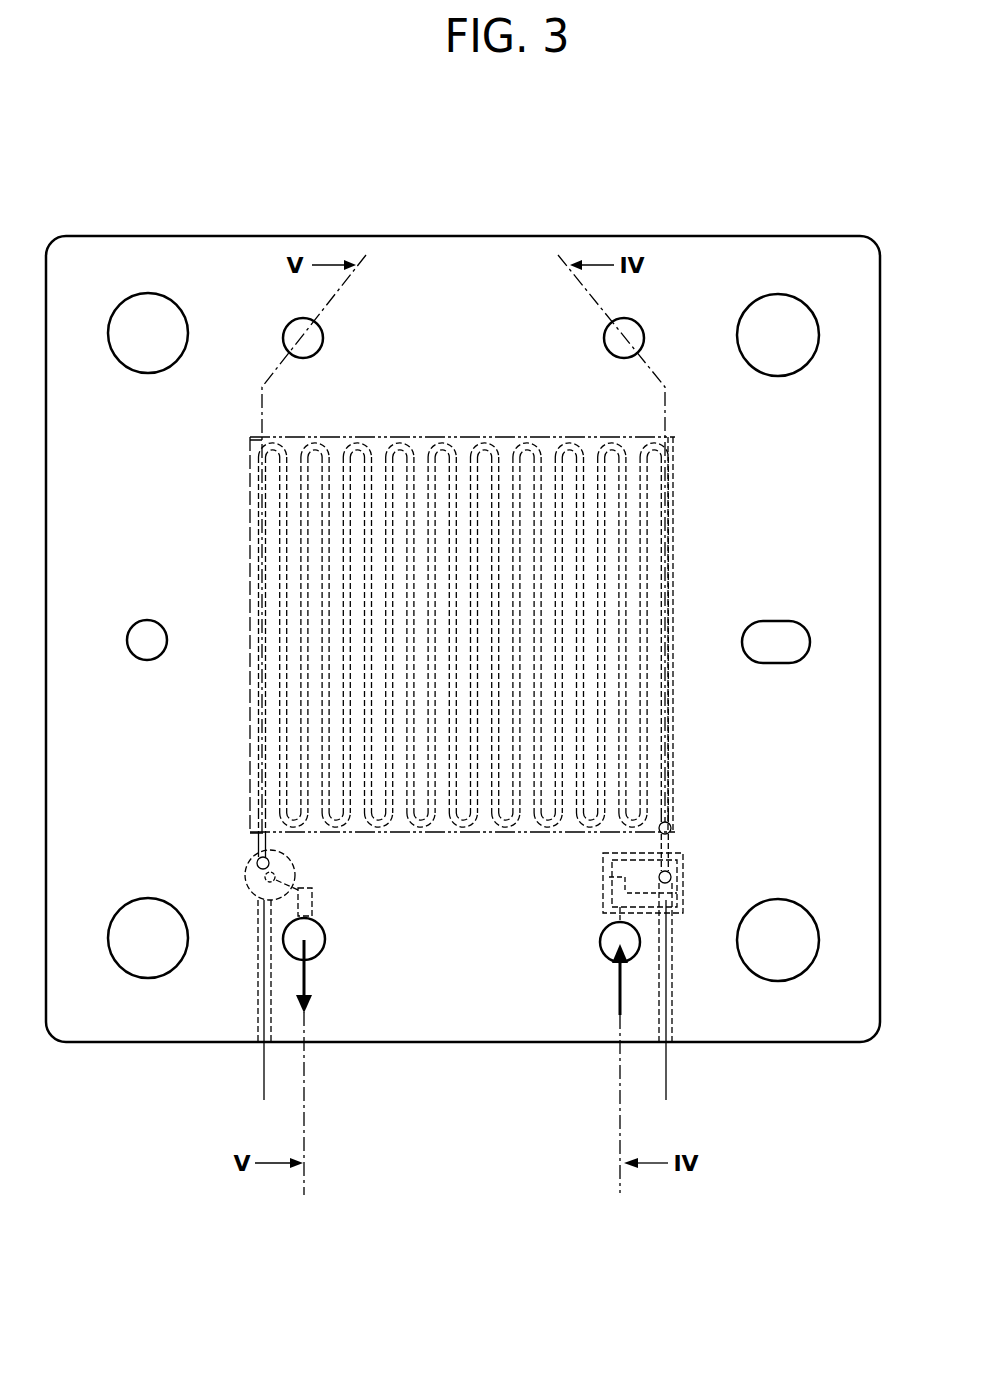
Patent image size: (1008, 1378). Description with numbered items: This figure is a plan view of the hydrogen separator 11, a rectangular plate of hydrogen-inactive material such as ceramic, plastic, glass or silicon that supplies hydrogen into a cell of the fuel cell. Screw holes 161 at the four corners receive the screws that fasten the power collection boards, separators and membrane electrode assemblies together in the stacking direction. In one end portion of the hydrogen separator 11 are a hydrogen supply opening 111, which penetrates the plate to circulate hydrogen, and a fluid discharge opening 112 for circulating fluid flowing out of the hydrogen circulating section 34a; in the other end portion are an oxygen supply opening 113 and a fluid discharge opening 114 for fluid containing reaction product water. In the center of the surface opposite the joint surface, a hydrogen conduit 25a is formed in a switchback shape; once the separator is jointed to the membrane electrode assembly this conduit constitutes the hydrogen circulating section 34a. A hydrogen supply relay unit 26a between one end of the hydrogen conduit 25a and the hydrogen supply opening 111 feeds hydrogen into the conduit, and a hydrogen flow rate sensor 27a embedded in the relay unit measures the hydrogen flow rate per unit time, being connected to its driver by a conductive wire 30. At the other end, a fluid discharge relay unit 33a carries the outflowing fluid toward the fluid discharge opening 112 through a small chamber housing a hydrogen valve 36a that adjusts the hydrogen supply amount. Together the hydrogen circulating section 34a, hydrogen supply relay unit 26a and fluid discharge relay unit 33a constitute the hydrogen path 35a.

The hydrogen separator 11 is at (528, 178).
The screw holes 161 is at (118, 305).
The fluid discharge opening 114 is at (288, 327).
The oxygen supply opening 113 is at (645, 338).
The hydrogen conduit 25a is at (360, 445).
The hydrogen circulating section 34a is at (678, 505).
The hydrogen path 35a is at (675, 740).
The fluid discharge relay unit 33a is at (258, 850).
The hydrogen flow rate sensor 27a is at (685, 855).
The hydrogen supply relay unit 26a is at (683, 880).
The fluid discharge opening 112 is at (326, 940).
The hydrogen supply opening 111 is at (600, 942).
The hydrogen valve 36a is at (243, 878).
The conductive wire 30 is at (264, 1078).